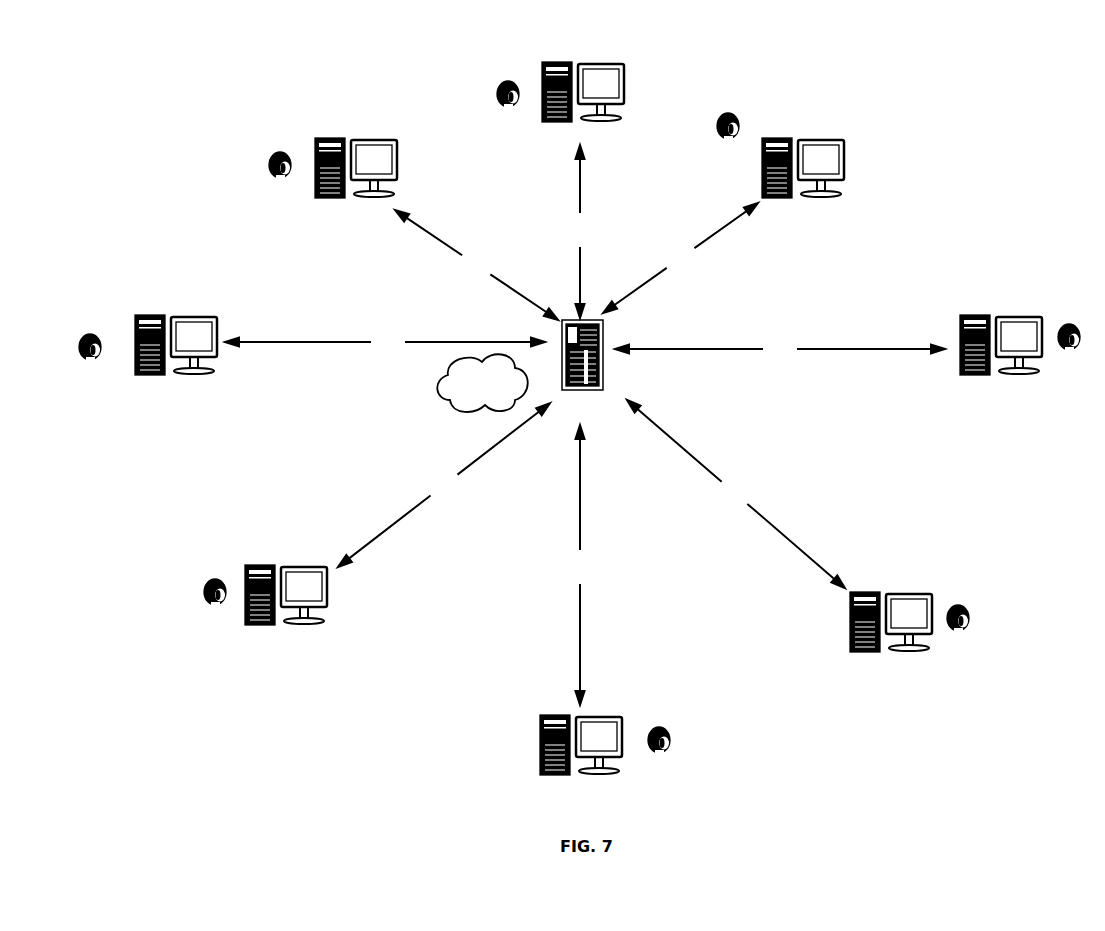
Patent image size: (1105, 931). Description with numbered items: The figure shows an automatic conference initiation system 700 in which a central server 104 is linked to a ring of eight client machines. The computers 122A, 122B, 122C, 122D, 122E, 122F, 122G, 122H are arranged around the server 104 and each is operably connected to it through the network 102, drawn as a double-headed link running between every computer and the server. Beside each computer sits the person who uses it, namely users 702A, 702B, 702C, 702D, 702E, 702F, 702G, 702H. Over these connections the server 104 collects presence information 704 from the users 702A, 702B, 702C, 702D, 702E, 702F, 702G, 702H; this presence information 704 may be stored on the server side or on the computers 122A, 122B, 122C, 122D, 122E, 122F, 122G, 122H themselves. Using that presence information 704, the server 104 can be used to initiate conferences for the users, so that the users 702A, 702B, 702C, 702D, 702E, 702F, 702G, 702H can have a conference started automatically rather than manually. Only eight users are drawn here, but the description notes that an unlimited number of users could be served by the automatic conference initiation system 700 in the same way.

The automatic conference initiation system 700 is at (866, 94).
The network 102 is at (585, 425).
The server 104 is at (582, 368).
The presence information 704 is at (482, 383).
The computer 122A is at (356, 180).
The computer 122B is at (583, 105).
The computer 122C is at (803, 181).
The computer 122D is at (1001, 357).
The computer 122E is at (891, 634).
The computer 122F is at (581, 758).
The computer 122G is at (286, 608).
The computer 122H is at (176, 358).
The user 702A is at (279, 178).
The user 702B is at (508, 107).
The user 702C is at (728, 142).
The user 702D is at (1069, 354).
The user 702E is at (958, 633).
The user 702F is at (659, 754).
The user 702G is at (215, 607).
The user 702H is at (90, 361).